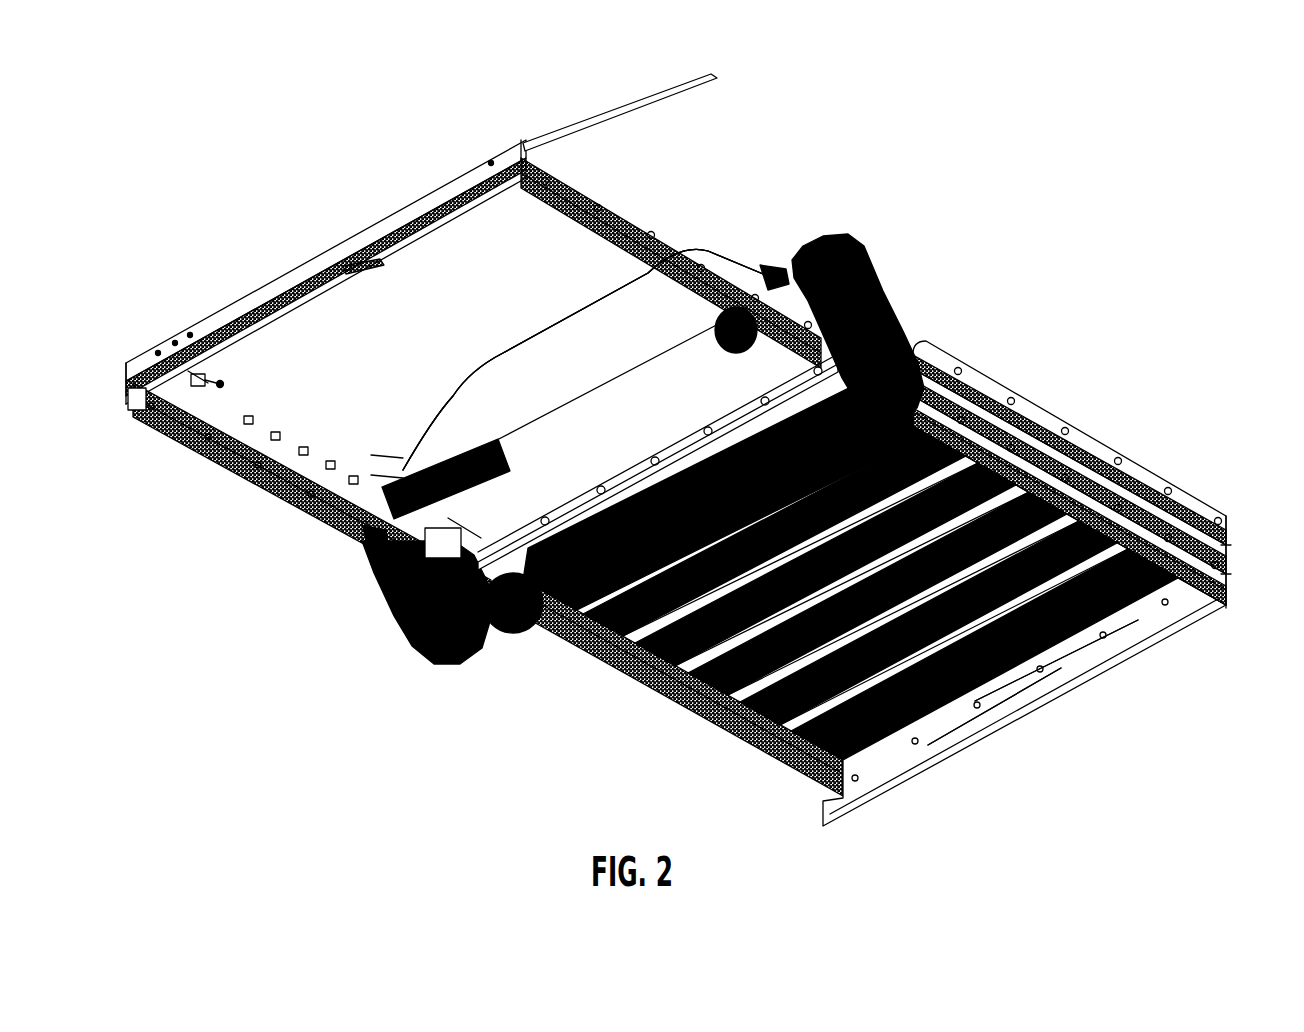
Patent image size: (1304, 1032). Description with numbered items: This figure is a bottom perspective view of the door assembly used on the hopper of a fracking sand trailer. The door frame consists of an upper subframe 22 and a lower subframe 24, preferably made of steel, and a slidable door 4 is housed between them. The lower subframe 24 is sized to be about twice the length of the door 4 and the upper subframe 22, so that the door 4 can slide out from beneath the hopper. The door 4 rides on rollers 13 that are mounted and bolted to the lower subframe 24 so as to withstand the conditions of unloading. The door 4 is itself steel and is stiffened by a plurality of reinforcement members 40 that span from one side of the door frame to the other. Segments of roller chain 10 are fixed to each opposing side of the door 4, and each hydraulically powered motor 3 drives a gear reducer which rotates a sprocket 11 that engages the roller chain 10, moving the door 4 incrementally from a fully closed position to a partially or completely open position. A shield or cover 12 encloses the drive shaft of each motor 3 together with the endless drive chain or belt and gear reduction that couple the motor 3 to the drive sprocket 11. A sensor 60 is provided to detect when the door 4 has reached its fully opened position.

The motor 3 is at (360, 527).
The slidable door 4 is at (987, 700).
The roller chain 10 is at (1069, 451).
The sprocket 11 is at (525, 632).
The shield or cover 12 is at (857, 248).
The rollers 13 is at (1220, 558).
The upper subframe 22 is at (975, 362).
The lower subframe 24 is at (1030, 417).
The reinforcement members 40 is at (1087, 643).
The sensor 60 is at (208, 373).